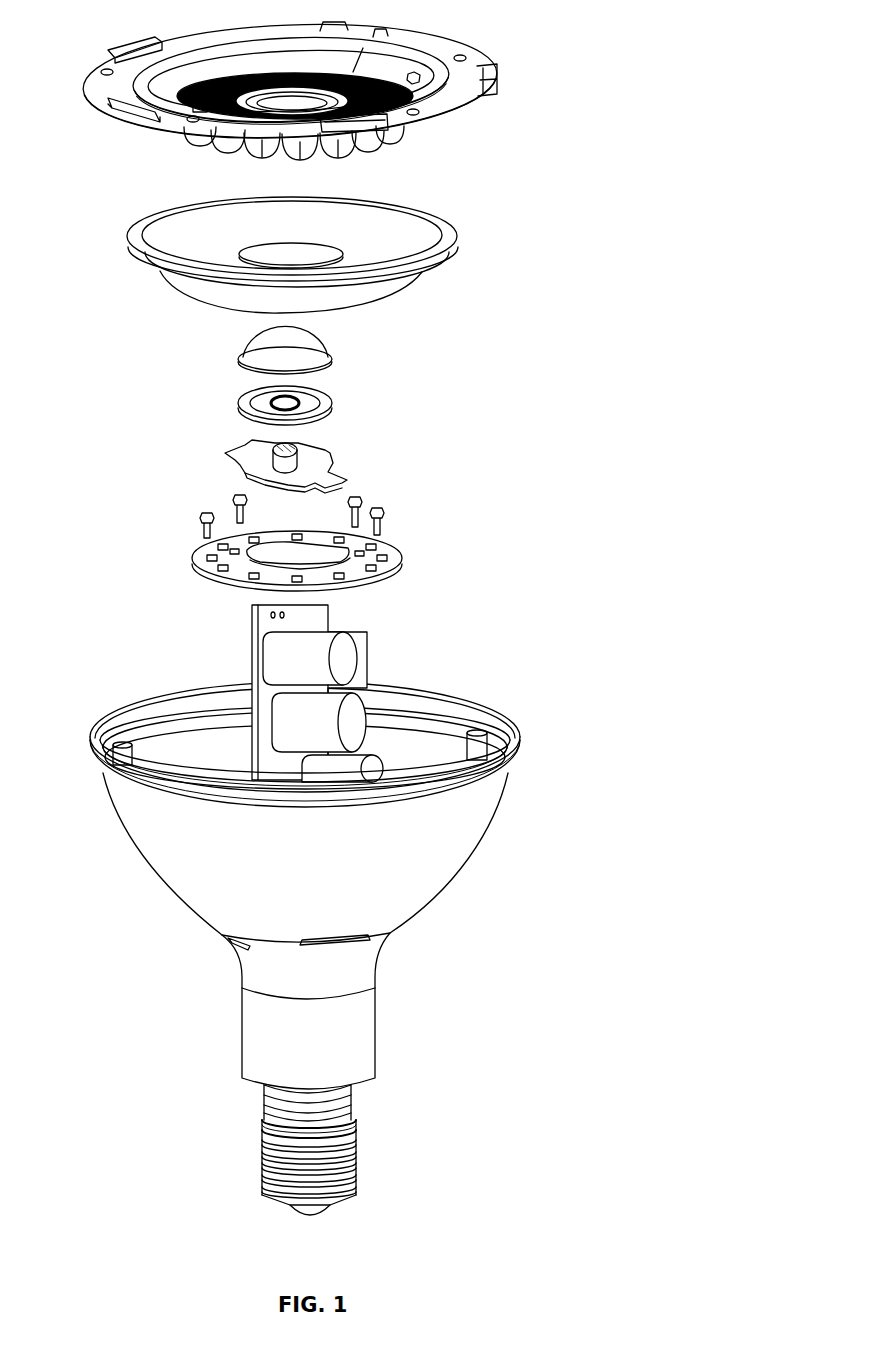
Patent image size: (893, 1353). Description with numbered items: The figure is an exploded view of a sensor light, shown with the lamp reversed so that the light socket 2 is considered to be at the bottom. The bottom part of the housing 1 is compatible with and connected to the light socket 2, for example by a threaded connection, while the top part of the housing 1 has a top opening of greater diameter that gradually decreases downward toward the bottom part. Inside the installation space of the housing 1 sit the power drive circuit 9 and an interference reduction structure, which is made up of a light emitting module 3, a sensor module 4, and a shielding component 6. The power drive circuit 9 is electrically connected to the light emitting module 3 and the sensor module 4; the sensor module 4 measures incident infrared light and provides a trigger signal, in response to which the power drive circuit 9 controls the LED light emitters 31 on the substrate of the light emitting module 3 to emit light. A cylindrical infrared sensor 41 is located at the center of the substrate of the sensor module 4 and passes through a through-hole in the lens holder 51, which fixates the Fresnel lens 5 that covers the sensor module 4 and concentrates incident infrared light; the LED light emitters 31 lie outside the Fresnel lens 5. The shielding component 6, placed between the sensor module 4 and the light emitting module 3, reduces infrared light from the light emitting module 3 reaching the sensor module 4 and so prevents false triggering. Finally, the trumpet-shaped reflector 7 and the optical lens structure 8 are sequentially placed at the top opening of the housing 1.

The housing 1 is at (372, 858).
The light socket 2 is at (360, 1158).
The light emitting module 3 is at (349, 555).
The LED light emitter 31 is at (397, 557).
The sensor module 4 is at (351, 460).
The infrared sensor 41 is at (298, 458).
The Fresnel lens 5 is at (305, 350).
The lens holder 51 is at (325, 405).
The shielding component 6 is at (345, 255).
The reflector 7 is at (312, 226).
The optical lens structure 8 is at (393, 62).
The power drive circuit 9 is at (310, 710).